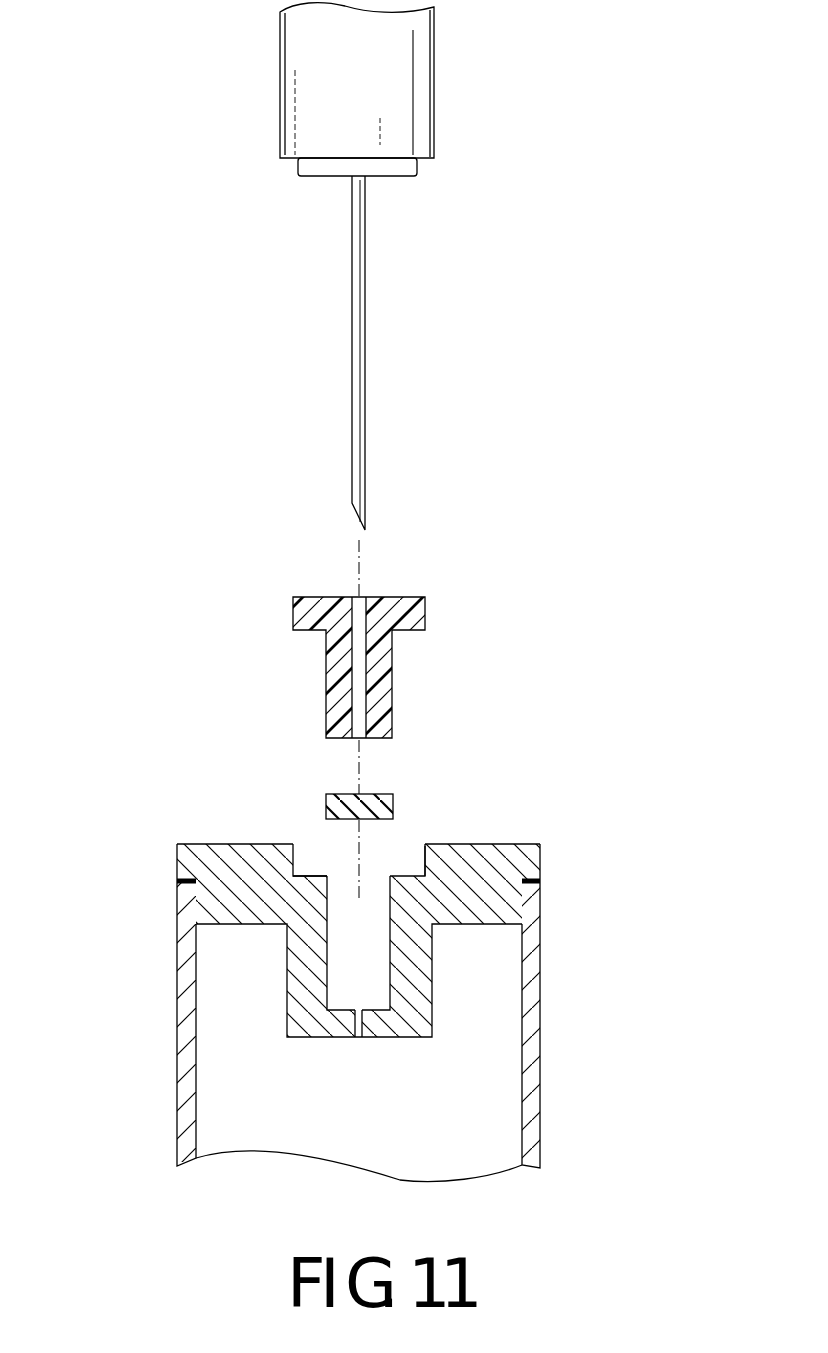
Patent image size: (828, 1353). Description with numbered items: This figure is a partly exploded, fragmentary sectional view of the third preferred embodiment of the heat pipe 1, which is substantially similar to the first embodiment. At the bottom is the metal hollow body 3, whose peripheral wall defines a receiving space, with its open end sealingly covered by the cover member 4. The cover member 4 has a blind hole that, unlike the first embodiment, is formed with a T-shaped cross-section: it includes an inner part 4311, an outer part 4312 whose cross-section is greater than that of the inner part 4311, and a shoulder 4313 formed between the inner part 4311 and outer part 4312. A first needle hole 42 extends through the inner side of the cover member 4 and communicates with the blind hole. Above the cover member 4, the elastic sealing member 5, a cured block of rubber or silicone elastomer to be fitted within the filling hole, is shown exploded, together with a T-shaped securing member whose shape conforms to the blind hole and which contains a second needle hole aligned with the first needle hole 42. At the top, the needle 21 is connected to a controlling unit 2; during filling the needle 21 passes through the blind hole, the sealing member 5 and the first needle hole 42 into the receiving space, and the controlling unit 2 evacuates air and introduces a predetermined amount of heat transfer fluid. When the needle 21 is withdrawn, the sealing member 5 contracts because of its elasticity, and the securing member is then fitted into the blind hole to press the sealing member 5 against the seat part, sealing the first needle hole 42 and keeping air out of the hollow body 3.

The heat pipe 1 is at (365, 946).
The controlling unit 2 is at (438, 104).
The needle 21 is at (367, 381).
The metal hollow body 3 is at (542, 1007).
The cover member 4 is at (224, 842).
The first needle hole 42 is at (358, 1039).
The inner part 4311 is at (387, 923).
The outer part 4312 is at (412, 853).
The shoulder 4313 is at (316, 882).
The elastic sealing member 5 is at (399, 797).